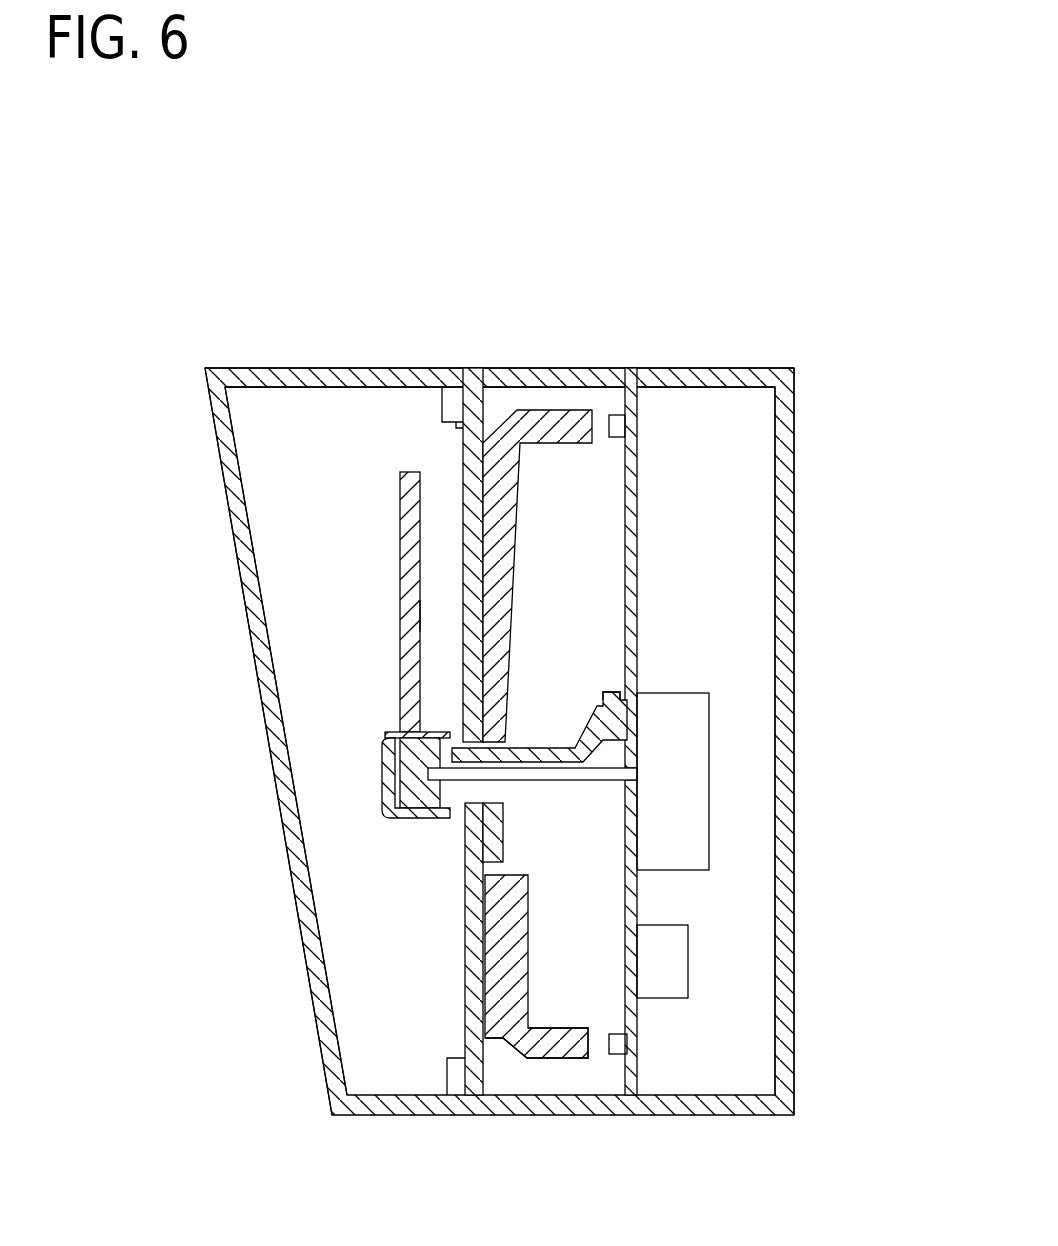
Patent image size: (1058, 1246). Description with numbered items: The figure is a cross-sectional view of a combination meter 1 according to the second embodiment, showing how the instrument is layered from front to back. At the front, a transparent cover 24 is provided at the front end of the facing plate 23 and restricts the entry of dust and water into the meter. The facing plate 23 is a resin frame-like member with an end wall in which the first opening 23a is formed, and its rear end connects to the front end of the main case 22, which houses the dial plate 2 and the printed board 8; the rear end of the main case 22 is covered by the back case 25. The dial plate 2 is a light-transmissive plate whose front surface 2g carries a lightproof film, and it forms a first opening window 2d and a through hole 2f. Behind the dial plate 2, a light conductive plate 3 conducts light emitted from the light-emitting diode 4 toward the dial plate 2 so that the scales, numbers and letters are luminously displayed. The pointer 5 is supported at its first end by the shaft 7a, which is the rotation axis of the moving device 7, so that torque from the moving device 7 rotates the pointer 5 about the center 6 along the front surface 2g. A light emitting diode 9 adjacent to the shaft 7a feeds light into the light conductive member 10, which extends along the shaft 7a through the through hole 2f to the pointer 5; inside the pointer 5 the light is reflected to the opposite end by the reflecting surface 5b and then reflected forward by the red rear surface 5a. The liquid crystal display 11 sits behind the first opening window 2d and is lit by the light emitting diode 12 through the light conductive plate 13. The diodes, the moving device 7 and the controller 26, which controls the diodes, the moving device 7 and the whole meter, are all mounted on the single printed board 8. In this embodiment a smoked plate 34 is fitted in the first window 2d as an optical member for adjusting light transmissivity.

The combination meter 1 is at (77, 222).
The dial plate 2 is at (460, 474).
The first opening window 2d is at (463, 909).
The through hole 2f is at (478, 803).
The front surface 2g is at (456, 428).
The light conductive plate 3 is at (554, 409).
The light-emitting diode 4 is at (613, 414).
The pointer 5 is at (394, 677).
The rear surface 5a is at (432, 616).
The reflecting surface 5b is at (425, 779).
The center 6 is at (382, 763).
The moving device 7 is at (698, 693).
The shaft 7a is at (607, 768).
The printed board 8 is at (637, 497).
The light emitting diode 9 is at (624, 682).
The light conductive member 10 is at (603, 694).
The liquid crystal display 11 is at (463, 950).
The light emitting diode 12 is at (616, 1054).
The light conductive plate 13 is at (548, 1060).
The main case 22 is at (505, 367).
The facing plate 23 is at (250, 364).
The first opening 23a is at (440, 387).
The transparent cover 24 is at (217, 440).
The back case 25 is at (728, 367).
The controller 26 is at (662, 925).
The smoked plate 34 is at (463, 995).